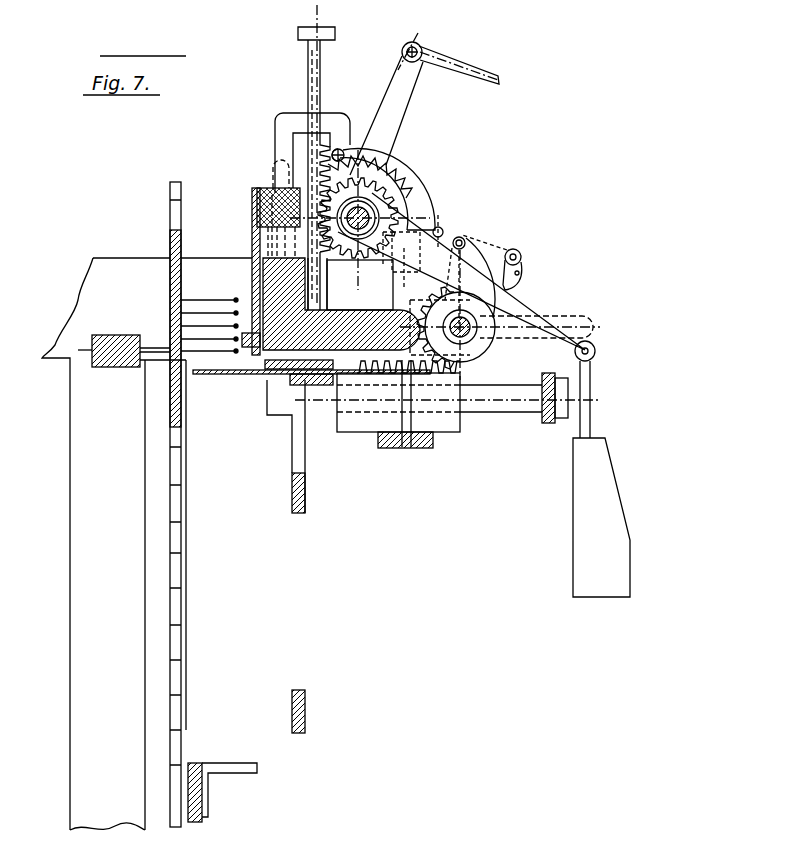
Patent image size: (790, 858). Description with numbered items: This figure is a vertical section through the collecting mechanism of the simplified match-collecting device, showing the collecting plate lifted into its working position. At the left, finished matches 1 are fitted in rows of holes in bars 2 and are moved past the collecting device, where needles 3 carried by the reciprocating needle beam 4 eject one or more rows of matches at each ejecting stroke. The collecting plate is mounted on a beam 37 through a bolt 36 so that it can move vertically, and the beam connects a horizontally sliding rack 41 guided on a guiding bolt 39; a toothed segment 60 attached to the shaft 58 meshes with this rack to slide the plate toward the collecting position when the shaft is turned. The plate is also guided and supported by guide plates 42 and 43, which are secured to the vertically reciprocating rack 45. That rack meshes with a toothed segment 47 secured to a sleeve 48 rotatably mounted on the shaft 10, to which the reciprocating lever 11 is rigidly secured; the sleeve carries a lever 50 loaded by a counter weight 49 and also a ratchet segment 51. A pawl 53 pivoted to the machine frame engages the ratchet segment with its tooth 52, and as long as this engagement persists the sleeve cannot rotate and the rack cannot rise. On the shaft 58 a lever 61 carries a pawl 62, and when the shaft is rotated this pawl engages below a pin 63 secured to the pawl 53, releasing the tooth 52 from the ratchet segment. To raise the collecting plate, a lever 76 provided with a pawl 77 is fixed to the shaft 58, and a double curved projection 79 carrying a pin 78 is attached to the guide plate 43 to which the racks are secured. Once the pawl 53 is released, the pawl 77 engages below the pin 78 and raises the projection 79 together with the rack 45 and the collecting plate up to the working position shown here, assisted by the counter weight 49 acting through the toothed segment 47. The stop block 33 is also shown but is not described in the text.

The finished matches 1 is at (154, 347).
The bars 2 is at (118, 338).
The needles 3 is at (178, 218).
The needle beam 4 is at (198, 304).
The shaft 10 is at (327, 203).
The lever 11 is at (398, 86).
The stop block 33 is at (306, 710).
The bolt 36 is at (412, 418).
The beam 37 is at (410, 450).
The guiding bolt 39 is at (517, 407).
The rack 41 is at (448, 382).
The guide plate 42 is at (292, 443).
The guide plate 43 is at (282, 379).
The rack 45 is at (316, 80).
The toothed segment 47 is at (366, 178).
The sleeve 48 is at (410, 213).
The counter weight 49 is at (607, 490).
The lever 50 is at (538, 316).
The ratchet segment 51 is at (408, 200).
The tooth 52 is at (372, 182).
The pawl 53 is at (350, 150).
The shaft 58 is at (523, 292).
The toothed segment 60 is at (484, 345).
The lever 61 is at (511, 248).
The pawl 62 is at (523, 263).
The pin 63 is at (440, 258).
The lever 76 is at (450, 283).
The pawl 77 is at (470, 252).
The pin 78 is at (441, 231).
The double curved projection 79 is at (387, 285).